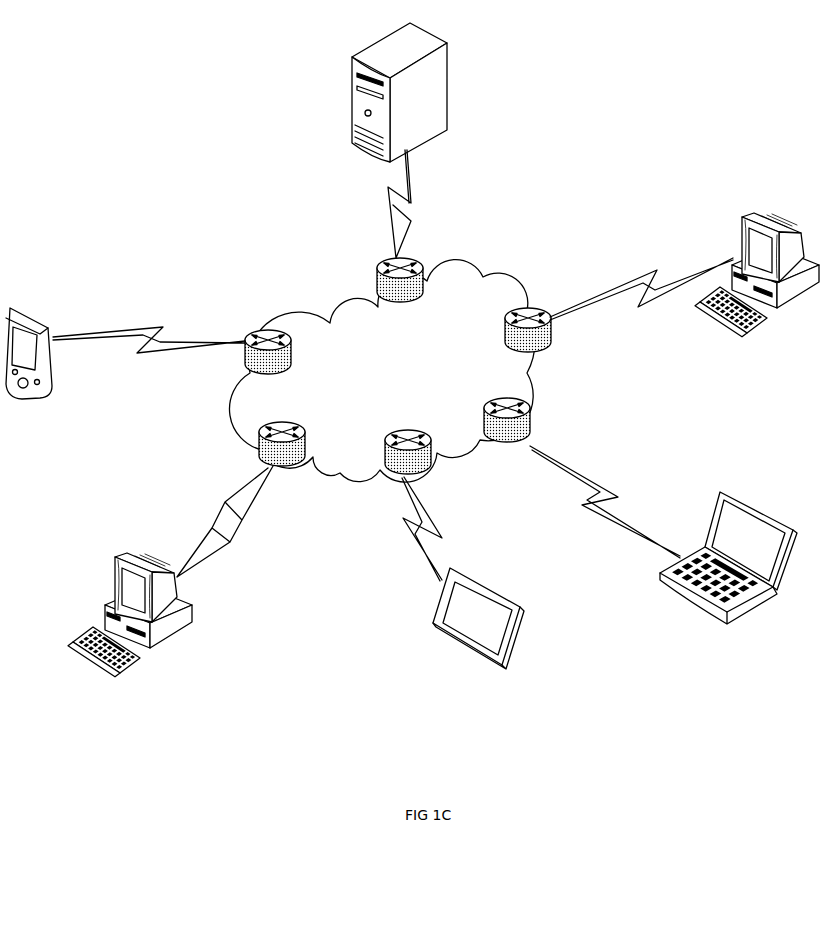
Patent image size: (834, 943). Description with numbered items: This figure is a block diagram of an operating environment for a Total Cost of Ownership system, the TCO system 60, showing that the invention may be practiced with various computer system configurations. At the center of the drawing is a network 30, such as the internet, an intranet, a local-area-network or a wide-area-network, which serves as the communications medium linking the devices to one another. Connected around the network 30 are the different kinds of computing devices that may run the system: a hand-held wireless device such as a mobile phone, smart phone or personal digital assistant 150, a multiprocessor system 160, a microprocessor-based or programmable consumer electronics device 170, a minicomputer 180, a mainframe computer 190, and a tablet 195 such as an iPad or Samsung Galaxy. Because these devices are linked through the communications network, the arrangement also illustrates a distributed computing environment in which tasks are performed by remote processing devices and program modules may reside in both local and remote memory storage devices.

The TCO system 60 is at (146, 186).
The network 30 is at (390, 370).
The personal digital assistant 150 is at (125, 364).
The multiprocessor system 160 is at (170, 572).
The programmable consumer electronics 170 is at (684, 275).
The minicomputer 180 is at (671, 535).
The mainframe computer 190 is at (410, 140).
The tablet 195 is at (472, 585).